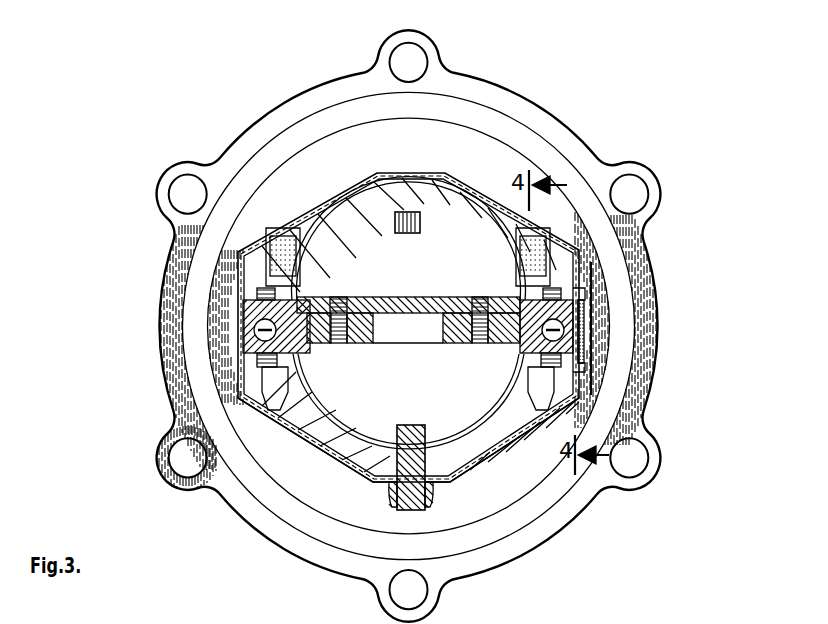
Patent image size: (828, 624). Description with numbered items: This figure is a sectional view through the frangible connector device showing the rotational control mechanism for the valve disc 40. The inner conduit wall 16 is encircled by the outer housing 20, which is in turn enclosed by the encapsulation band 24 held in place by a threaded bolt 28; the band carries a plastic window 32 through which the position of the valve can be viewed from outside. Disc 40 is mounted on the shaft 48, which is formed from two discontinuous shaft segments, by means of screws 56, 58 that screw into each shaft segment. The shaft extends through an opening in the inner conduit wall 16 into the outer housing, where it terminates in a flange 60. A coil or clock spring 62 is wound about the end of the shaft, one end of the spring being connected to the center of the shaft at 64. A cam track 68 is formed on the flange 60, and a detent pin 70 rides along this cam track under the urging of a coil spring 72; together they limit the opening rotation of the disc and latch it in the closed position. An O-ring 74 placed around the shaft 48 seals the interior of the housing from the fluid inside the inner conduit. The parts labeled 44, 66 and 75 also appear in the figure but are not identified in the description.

The inner conduit wall 16 is at (443, 212).
The outer housing 20 is at (341, 214).
The encapsulation band 24 is at (412, 200).
The threaded bolt 28 is at (352, 478).
The plastic window 32 is at (592, 352).
The valve disc 40 is at (390, 298).
The left bearing block 44 is at (308, 352).
The shaft 48 is at (500, 352).
The screw 56 is at (478, 300).
The screw 58 is at (334, 300).
The flange 60 is at (610, 245).
The coil or clock spring 62 is at (600, 280).
The shaft center connection 64 is at (592, 303).
The outer ring section 66 is at (590, 388).
The cam track 68 is at (588, 222).
The detent pin 70 is at (424, 216).
The coil spring 72 is at (500, 225).
The O-ring 74 is at (430, 470).
The set screw 75 is at (590, 330).